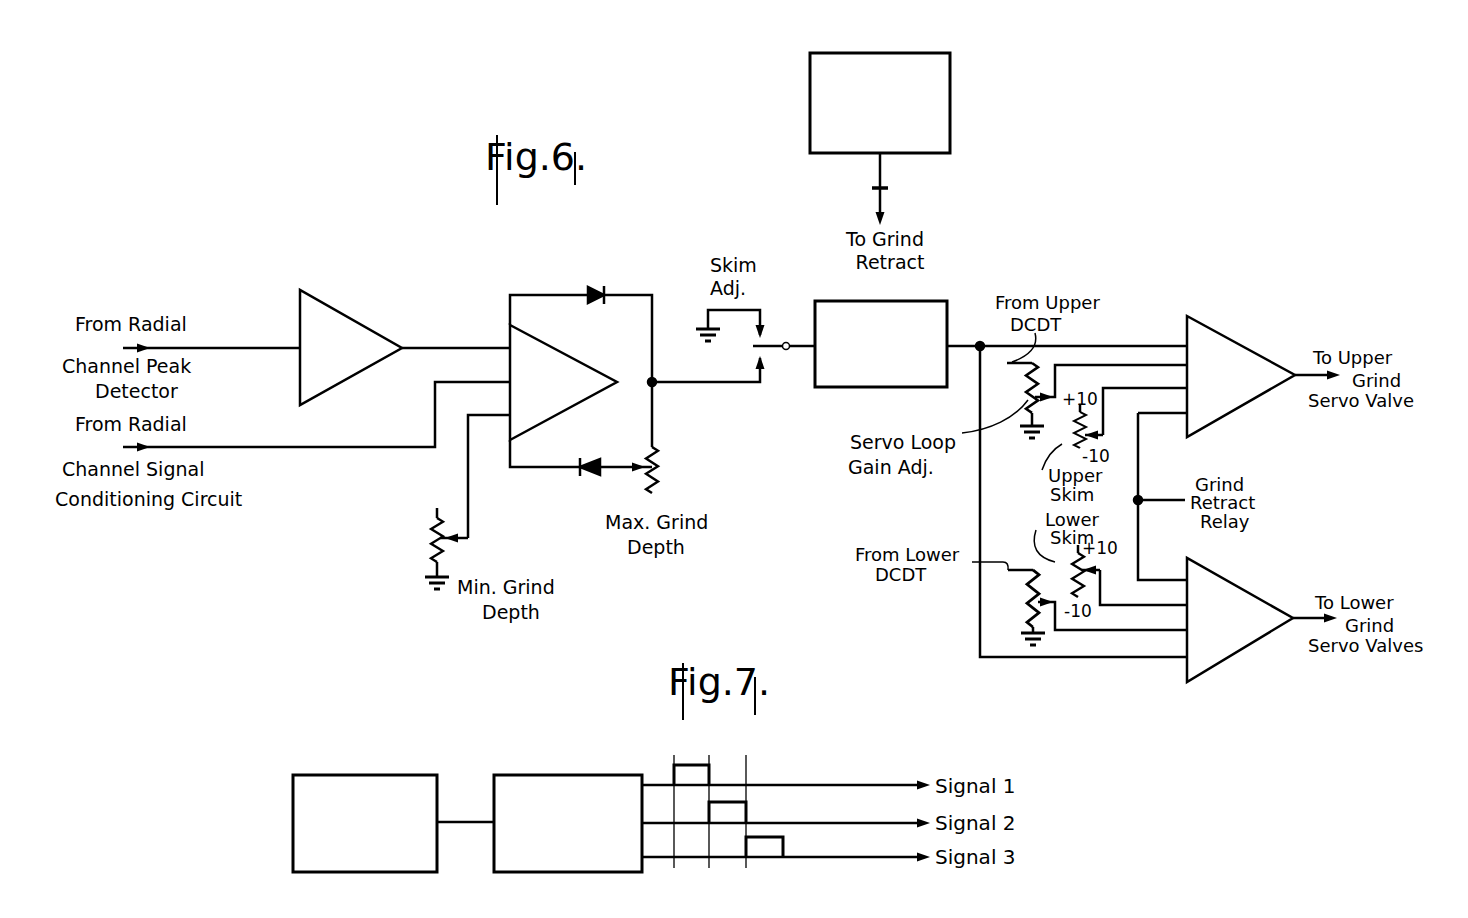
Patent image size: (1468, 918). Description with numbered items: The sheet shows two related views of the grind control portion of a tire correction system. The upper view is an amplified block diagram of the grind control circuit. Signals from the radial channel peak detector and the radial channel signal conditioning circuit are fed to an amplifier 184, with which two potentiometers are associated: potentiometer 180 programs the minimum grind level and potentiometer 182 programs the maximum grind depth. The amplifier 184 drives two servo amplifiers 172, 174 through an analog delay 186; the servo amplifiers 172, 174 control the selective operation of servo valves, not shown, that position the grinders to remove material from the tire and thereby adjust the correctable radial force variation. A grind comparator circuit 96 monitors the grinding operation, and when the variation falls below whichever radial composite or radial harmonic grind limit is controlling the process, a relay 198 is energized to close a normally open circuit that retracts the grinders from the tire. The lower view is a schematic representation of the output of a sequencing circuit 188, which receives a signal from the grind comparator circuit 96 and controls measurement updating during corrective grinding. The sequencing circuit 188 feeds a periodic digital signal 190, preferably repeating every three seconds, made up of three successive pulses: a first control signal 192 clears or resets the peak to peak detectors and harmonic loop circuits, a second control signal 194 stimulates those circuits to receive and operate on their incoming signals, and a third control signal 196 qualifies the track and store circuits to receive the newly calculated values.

In FIG. 6, the grind comparator circuit 96 is at (950, 120).
In FIG. 7, the grind comparator circuit 96 is at (388, 775).
In FIG. 6, the relay 198 is at (893, 186).
In FIG. 6, the amplifier 184 is at (552, 358).
In FIG. 6, the potentiometer 182 is at (665, 471).
In FIG. 6, the potentiometer 180 is at (428, 546).
In FIG. 6, the analog delay 186 is at (872, 388).
In FIG. 6, the servo amplifier 172 is at (1227, 340).
In FIG. 6, the servo amplifier 174 is at (1212, 657).
In FIG. 7, the sequencing circuit 188 is at (568, 778).
In FIG. 7, the periodic digital signal 190 is at (730, 762).
In FIG. 7, the first control signal 192 is at (693, 760).
In FIG. 7, the second control signal 194 is at (729, 797).
In FIG. 7, the third control signal 196 is at (765, 860).